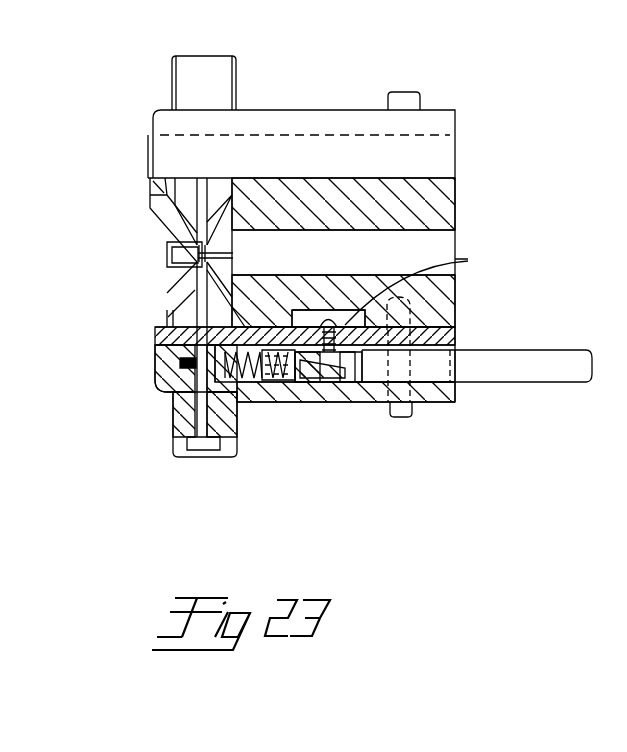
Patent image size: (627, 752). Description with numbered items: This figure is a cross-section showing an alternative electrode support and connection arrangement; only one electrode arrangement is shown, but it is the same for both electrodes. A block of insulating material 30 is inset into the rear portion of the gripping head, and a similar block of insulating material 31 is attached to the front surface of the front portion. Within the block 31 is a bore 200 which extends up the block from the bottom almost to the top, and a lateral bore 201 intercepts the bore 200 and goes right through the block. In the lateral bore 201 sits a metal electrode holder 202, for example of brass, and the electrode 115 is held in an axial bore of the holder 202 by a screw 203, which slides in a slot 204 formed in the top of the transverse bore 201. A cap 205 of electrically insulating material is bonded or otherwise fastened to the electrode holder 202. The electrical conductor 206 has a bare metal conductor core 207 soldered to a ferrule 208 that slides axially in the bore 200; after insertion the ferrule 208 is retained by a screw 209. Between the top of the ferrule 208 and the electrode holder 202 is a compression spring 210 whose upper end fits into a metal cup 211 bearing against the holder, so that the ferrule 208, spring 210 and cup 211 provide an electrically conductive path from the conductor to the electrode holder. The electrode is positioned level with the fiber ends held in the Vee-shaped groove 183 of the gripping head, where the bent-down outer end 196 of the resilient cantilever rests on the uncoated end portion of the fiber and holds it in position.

The block of insulating material 30 is at (328, 120).
The cap 205 is at (217, 70).
The Vee-shaped groove 183 is at (152, 210).
The electrode 115 is at (193, 231).
The outer end of the cantilever 196 is at (180, 258).
The screw 203 is at (180, 363).
The lateral bore 201 is at (155, 333).
The electrode holder 202 is at (190, 410).
The slot 204 is at (180, 382).
The compression spring 210 is at (243, 383).
The metal cup 211 is at (235, 407).
The block of insulating material 31 is at (300, 383).
The bore 200 is at (290, 387).
The ferrule 208 is at (345, 385).
The bare metal conductor core 207 is at (353, 383).
The screw 209 is at (423, 290).
The electrical conductor 206 is at (502, 360).